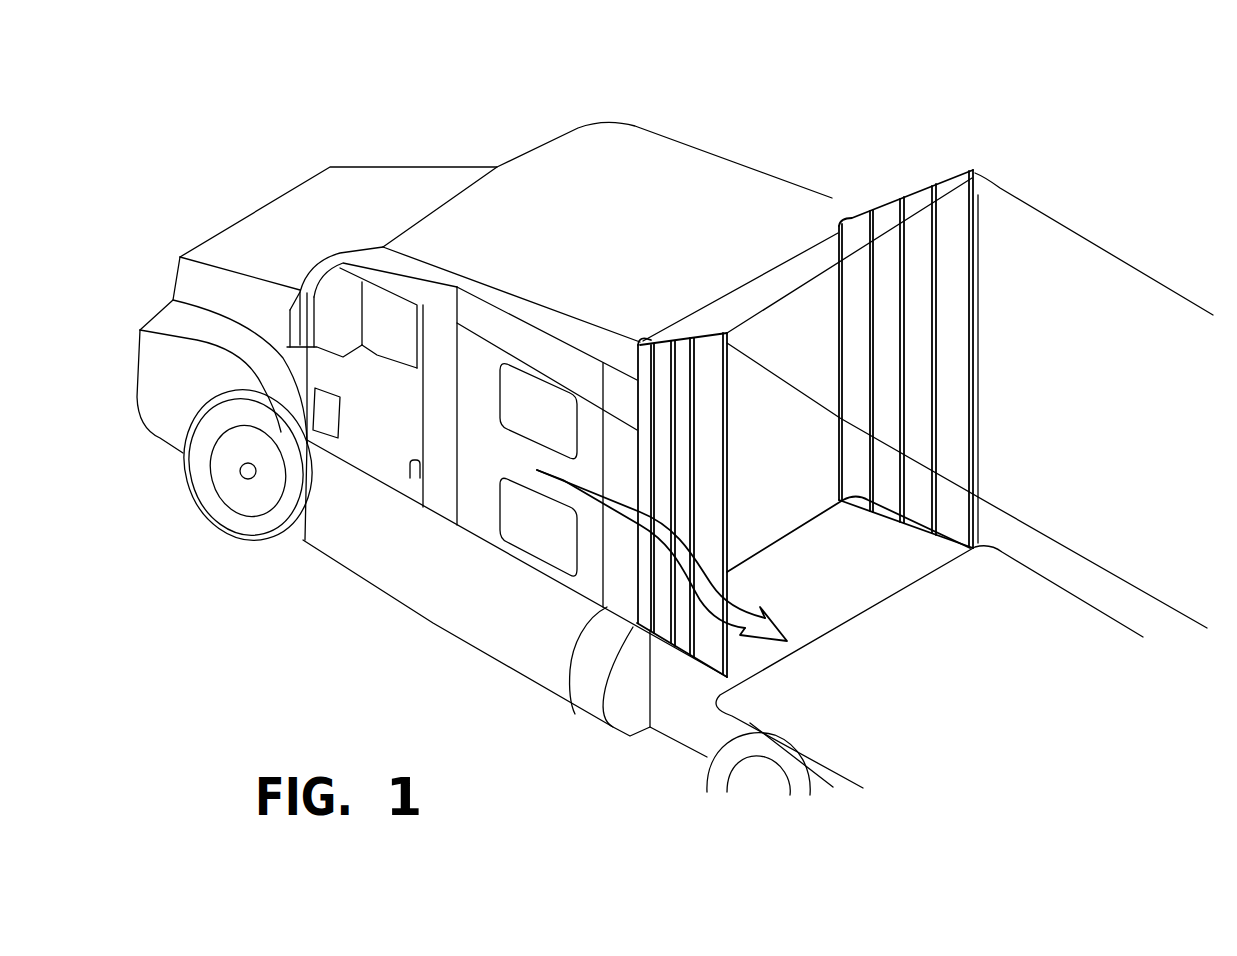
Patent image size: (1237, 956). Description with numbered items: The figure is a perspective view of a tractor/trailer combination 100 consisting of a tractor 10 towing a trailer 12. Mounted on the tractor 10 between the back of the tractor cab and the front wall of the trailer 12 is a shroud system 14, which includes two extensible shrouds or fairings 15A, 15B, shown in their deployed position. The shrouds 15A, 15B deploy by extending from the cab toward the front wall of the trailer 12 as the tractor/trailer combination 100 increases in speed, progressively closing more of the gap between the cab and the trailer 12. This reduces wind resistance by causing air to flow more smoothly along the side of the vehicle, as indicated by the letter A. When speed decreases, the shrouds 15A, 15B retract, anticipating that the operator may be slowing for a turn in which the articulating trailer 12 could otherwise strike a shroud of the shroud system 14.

The tractor 10 is at (387, 167).
The trailer 12 is at (1107, 250).
The shroud system 14 is at (979, 160).
The extensible shroud 15A is at (917, 200).
The extensible shroud 15B is at (710, 487).
The tractor/trailer combination 100 is at (280, 600).
The air flow A is at (553, 478).